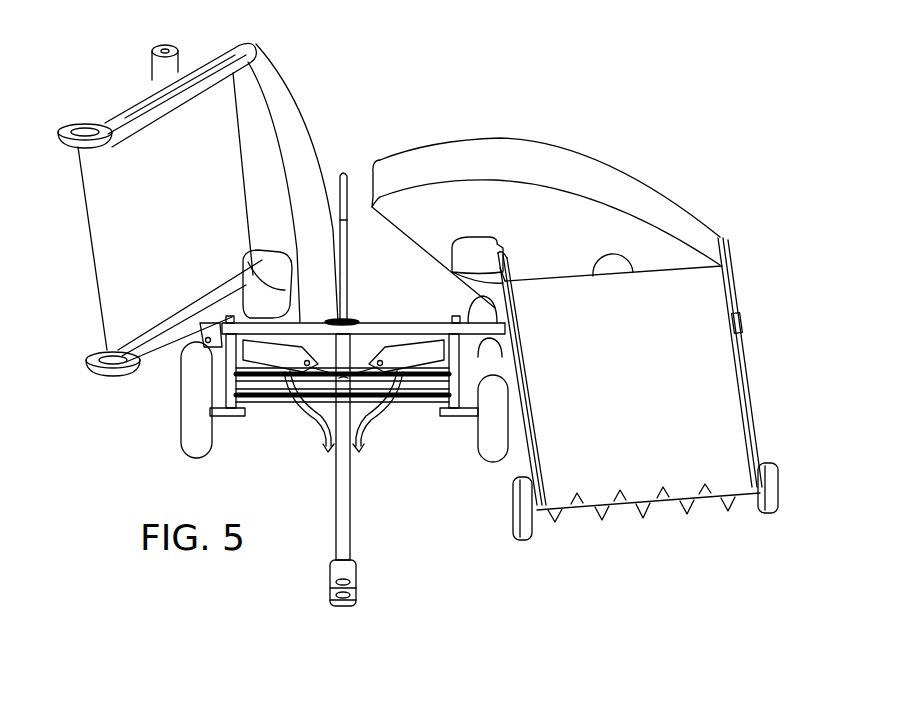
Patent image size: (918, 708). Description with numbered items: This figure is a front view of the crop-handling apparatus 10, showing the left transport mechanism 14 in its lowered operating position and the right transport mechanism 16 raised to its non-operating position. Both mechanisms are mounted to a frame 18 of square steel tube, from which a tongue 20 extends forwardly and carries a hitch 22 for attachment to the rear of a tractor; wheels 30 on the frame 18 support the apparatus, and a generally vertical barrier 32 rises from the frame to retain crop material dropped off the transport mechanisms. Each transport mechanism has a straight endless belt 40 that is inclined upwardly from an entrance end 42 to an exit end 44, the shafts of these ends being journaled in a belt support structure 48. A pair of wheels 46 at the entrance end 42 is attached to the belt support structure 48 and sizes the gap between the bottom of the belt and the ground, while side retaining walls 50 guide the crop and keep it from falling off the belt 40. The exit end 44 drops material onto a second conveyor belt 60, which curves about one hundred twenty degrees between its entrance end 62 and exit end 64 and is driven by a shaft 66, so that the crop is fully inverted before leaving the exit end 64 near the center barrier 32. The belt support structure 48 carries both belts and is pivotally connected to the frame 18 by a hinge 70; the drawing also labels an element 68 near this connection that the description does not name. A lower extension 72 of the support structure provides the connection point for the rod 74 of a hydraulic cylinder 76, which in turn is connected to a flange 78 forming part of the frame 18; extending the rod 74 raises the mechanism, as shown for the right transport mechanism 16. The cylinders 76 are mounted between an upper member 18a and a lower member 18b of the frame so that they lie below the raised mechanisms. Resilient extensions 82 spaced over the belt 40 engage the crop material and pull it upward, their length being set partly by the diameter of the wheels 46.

The apparatus 10 is at (712, 152).
The left transport mechanism 14 is at (645, 170).
The right transport mechanism 16 is at (205, 32).
The frame 18 is at (282, 415).
The upper member 18a is at (295, 317).
The lower member 18b is at (293, 433).
The tongue 20 is at (450, 318).
The hitch 22 is at (353, 582).
The wheels 30 is at (178, 430).
The barrier 32 is at (347, 170).
The belt 40 is at (152, 192).
The entrance end 42 is at (115, 240).
The exit end 44 is at (250, 210).
The wheels 46 is at (70, 125).
The belt support structure 48 is at (495, 333).
The side retaining walls 50 is at (142, 117).
The second conveyor belt 60 is at (243, 117).
The entrance end 62 is at (158, 70).
The exit end 64 is at (407, 250).
The shaft 66 is at (157, 44).
The pivot 68 is at (465, 303).
The hinge 70 is at (285, 132).
The lower extension 72 is at (270, 283).
The rod 74 is at (210, 347).
The hydraulic cylinder 76 is at (270, 357).
The flange 78 is at (368, 373).
The extensions 82 is at (727, 503).